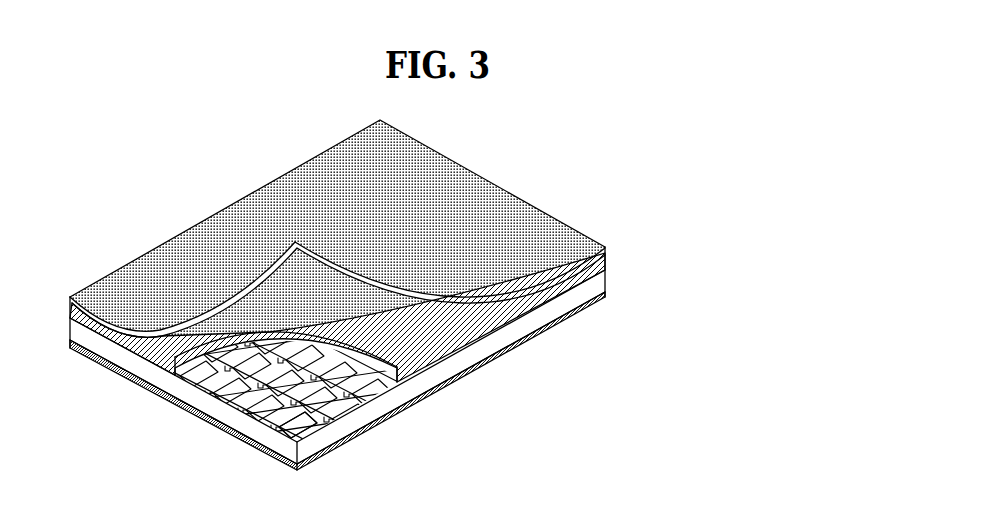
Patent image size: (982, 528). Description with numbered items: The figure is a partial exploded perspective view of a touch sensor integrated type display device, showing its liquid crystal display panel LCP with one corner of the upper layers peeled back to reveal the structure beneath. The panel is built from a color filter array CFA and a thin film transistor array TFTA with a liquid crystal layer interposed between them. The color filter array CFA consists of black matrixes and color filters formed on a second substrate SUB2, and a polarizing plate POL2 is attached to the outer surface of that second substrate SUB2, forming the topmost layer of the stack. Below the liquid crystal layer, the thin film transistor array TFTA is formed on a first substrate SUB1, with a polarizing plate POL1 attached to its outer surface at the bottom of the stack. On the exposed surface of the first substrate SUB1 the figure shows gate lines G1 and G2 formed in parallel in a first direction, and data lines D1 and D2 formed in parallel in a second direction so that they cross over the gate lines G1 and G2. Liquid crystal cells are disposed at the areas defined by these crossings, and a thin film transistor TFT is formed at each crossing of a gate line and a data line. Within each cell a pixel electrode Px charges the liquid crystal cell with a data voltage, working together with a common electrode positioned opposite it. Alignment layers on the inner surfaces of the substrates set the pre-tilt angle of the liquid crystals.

The liquid crystal display panel LCP is at (401, 305).
The color filter array CFA is at (407, 251).
The thin film transistor array TFTA is at (378, 369).
The polarizing plate POL2 is at (607, 248).
The second substrate SUB2 is at (607, 259).
The first substrate SUB1 is at (607, 283).
The polarizing plate POL1 is at (607, 297).
The gate line G1 is at (343, 418).
The gate line G2 is at (392, 400).
The data line D1 is at (256, 410).
The data line D2 is at (224, 402).
The pixel electrode Px is at (298, 428).
The thin film transistor TFT is at (205, 398).